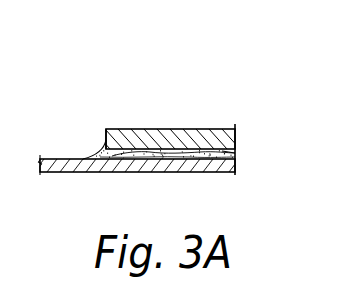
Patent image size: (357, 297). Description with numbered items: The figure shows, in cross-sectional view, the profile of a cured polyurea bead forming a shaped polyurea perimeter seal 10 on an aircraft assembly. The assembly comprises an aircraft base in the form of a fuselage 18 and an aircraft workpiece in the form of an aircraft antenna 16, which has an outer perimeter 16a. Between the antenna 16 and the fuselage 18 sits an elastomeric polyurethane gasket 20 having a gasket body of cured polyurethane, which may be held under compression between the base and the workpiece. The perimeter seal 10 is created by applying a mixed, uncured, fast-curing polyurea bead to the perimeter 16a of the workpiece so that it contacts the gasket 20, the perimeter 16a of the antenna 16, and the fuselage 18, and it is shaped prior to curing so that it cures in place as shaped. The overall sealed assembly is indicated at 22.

The shaped polyurea perimeter seal 10 is at (101, 148).
The aircraft antenna 16 is at (213, 129).
The outer perimeter 16a is at (106, 130).
The fuselage 18 is at (112, 172).
The polyurethane gasket 20 is at (237, 153).
The assembly 22 is at (135, 98).